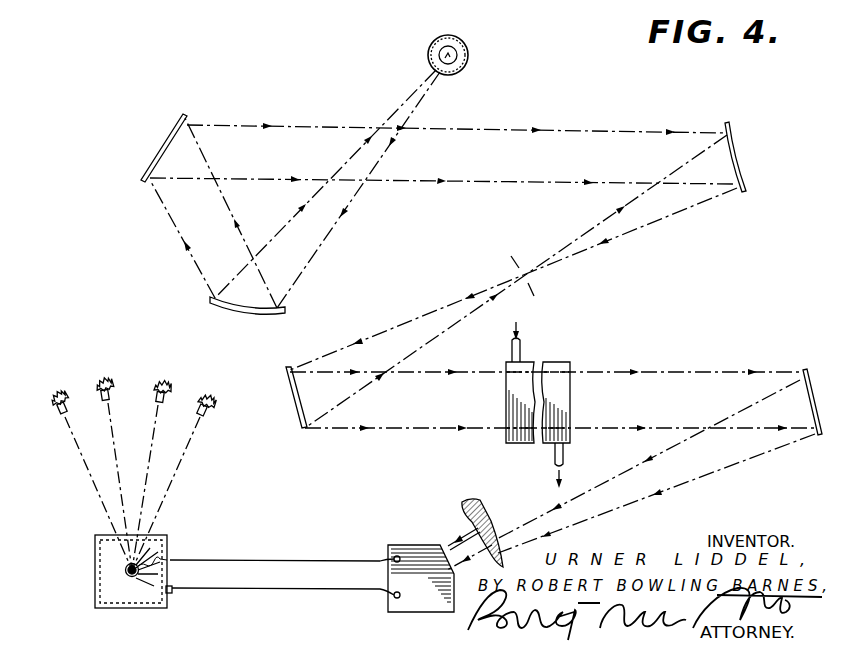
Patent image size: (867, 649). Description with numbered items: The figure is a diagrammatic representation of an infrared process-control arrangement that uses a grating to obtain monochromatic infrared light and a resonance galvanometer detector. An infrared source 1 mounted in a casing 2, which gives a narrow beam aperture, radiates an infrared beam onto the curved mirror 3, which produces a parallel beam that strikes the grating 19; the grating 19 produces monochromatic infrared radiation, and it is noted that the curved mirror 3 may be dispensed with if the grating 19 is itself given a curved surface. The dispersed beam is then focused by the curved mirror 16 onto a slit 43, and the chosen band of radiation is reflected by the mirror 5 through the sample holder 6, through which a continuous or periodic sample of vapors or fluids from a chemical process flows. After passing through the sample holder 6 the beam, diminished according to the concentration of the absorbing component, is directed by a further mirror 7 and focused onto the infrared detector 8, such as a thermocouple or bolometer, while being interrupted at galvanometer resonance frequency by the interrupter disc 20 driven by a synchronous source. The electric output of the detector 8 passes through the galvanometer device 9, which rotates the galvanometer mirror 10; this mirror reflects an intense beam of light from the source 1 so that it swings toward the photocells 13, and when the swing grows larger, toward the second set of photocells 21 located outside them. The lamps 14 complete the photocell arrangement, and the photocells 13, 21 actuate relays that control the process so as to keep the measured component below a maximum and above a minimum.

The infrared source 1 is at (428, 55).
The casing 2 is at (468, 55).
The curved mirror 3 is at (255, 311).
The mirror 5 is at (303, 430).
The sample holder 6 is at (568, 362).
The mirror 7 is at (804, 368).
The infrared detector 8 is at (390, 545).
The galvanometer device 9 is at (95, 552).
The galvanometer mirror 10 is at (126, 574).
The photocell 13 is at (110, 398).
The lamps 14 is at (142, 462).
The curved mirror 16 is at (742, 170).
The grating 19 is at (160, 150).
The interrupter disc 20 is at (462, 506).
The second set of photocells 21 is at (60, 418).
The slit 43 is at (534, 279).